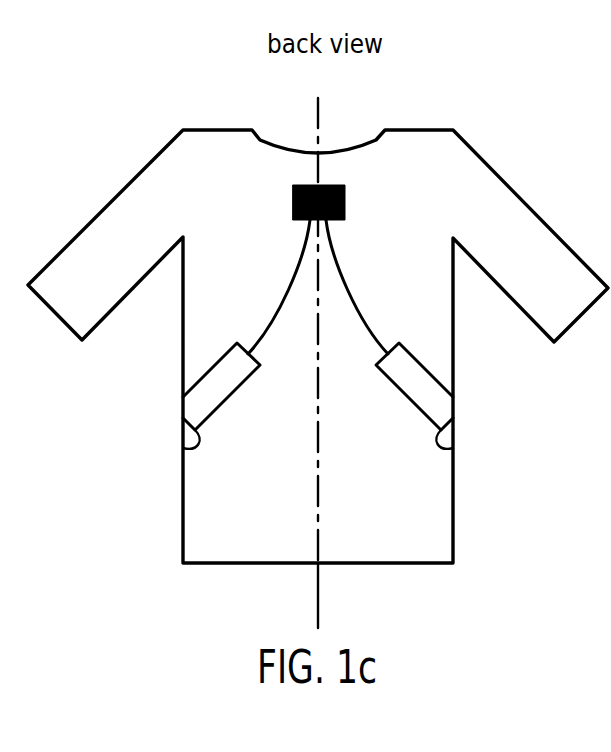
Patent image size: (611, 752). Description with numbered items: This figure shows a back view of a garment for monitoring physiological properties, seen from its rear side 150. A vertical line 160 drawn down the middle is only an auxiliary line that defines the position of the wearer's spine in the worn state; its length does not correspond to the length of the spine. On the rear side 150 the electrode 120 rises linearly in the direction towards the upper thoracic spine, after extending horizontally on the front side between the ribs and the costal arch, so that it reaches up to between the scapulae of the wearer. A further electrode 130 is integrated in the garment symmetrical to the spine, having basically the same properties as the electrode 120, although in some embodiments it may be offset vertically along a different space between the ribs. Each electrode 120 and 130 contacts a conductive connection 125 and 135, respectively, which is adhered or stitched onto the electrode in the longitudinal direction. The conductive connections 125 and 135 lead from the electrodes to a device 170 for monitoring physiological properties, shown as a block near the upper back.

The electrode 120 is at (183, 448).
The conductive connection 125 is at (183, 416).
The further electrode 130 is at (453, 418).
The conductive connection 135 is at (453, 448).
The rear side 150 is at (188, 536).
The line 160 is at (319, 600).
The device for monitoring physiological properties 170 is at (345, 203).